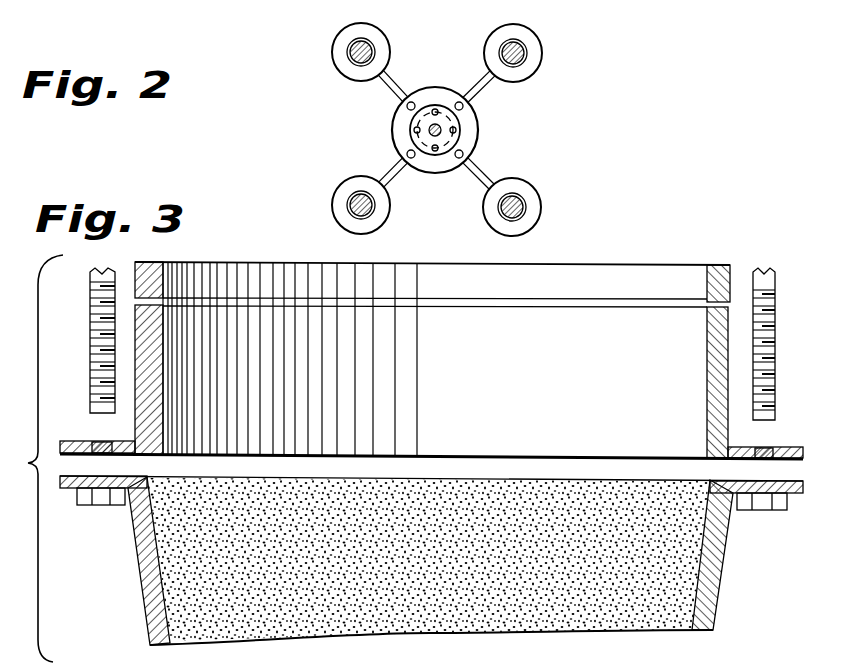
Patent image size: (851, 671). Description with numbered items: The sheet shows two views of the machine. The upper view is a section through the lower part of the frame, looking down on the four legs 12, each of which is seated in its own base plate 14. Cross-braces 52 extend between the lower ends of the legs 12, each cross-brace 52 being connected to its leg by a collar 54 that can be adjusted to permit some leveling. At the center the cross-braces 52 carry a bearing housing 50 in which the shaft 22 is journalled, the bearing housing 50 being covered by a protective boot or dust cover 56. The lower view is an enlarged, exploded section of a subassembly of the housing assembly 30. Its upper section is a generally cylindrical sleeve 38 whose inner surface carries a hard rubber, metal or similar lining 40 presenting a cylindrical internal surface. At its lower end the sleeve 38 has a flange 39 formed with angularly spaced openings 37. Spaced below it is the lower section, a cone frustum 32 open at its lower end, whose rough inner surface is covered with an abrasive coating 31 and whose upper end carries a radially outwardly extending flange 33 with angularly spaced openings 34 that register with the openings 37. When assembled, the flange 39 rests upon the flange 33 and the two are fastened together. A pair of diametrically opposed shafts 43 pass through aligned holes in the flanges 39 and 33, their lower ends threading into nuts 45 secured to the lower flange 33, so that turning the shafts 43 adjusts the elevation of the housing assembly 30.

In FIG. 2, the leg 12 is at (352, 50).
In FIG. 2, the base plate 14 is at (384, 45).
In FIG. 2, the shaft 22 is at (440, 132).
In FIG. 2, the bearing housing 50 is at (440, 158).
In FIG. 2, the cross-brace 52 is at (490, 88).
In FIG. 2, the collar 54 is at (525, 68).
In FIG. 2, the dust cover 56 is at (432, 88).
In FIG. 3, the housing assembly 30 is at (32, 458).
In FIG. 3, the abrasive coating 31 is at (687, 571).
In FIG. 3, the cone frustum 32 is at (717, 604).
In FIG. 3, the flange 33 is at (807, 484).
In FIG. 3, the openings 34 is at (78, 488).
In FIG. 3, the openings 37 is at (97, 441).
In FIG. 3, the cylindrical sleeve 38 is at (650, 266).
In FIG. 3, the flange 39 is at (787, 452).
In FIG. 3, the lining 40 is at (714, 264).
In FIG. 3, the shaft 43 is at (100, 282).
In FIG. 3, the nut 45 is at (101, 497).